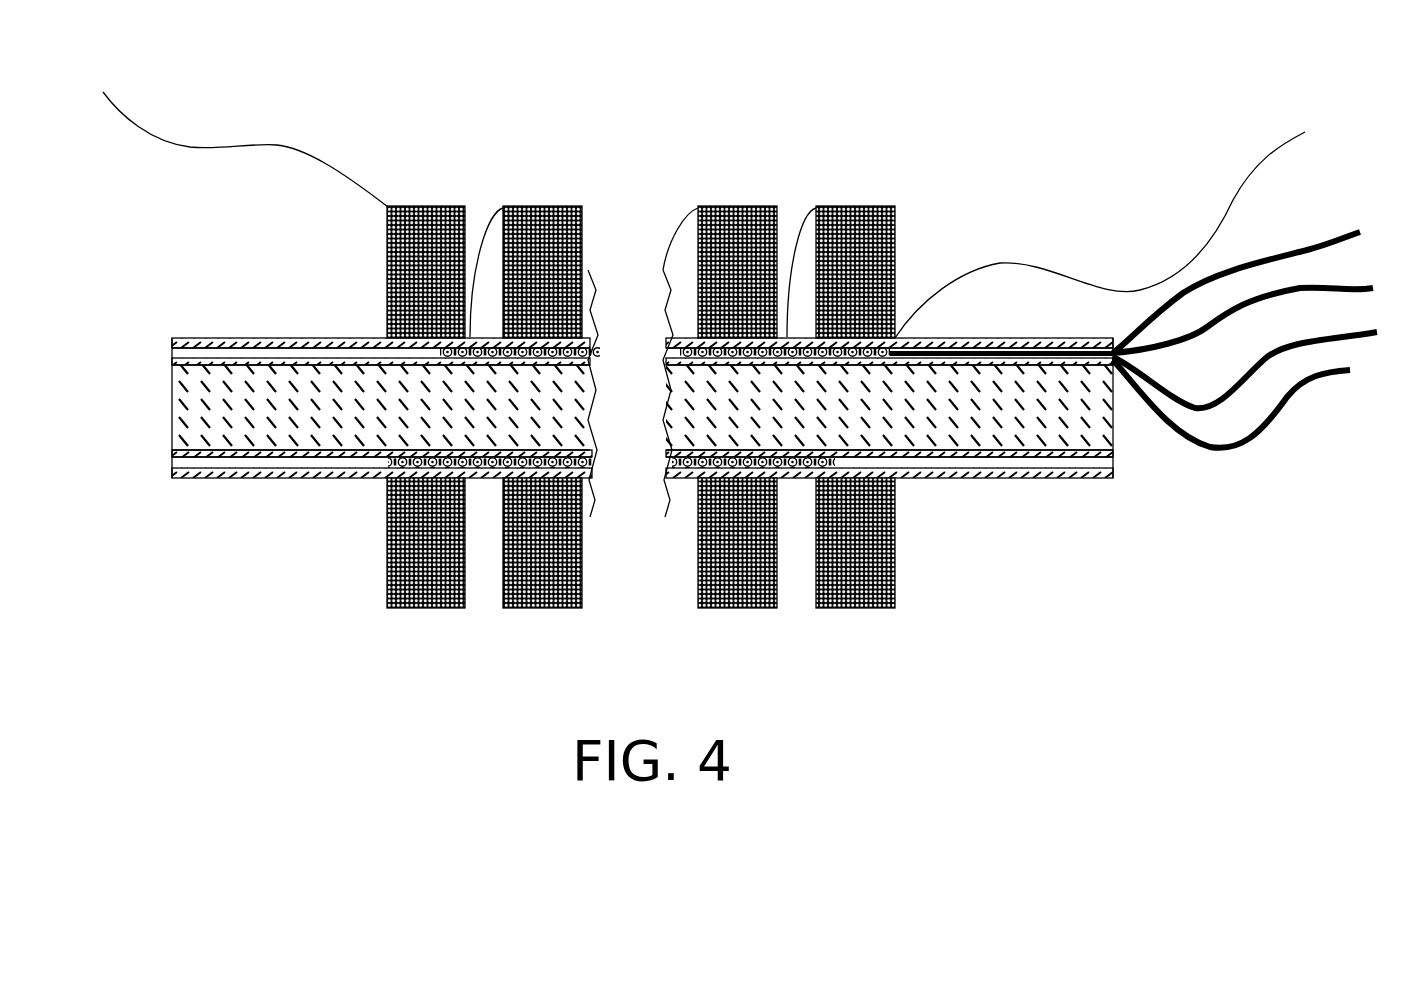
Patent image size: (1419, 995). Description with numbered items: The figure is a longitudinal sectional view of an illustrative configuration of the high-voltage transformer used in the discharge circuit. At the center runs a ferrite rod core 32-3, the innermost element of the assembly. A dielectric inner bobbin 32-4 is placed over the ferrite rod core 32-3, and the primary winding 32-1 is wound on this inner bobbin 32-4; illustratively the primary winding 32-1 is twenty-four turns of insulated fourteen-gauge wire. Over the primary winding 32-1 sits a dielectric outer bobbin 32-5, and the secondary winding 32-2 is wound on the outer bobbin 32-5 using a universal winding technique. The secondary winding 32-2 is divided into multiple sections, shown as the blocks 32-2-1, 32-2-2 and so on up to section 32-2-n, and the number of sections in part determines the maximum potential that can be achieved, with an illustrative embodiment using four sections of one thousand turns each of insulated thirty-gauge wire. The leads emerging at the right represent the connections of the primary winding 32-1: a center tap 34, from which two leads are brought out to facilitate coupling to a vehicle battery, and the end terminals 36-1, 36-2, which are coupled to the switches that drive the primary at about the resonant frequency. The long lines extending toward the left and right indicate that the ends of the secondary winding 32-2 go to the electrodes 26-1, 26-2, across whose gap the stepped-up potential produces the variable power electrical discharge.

The primary winding 32-1 is at (665, 466).
The secondary winding 32-2 is at (895, 173).
The secondary winding section 32-2-n is at (402, 608).
The secondary winding section 32-2-2 is at (728, 608).
The secondary winding section 32-2-1 is at (875, 608).
The ferrite rod core 32-3 is at (172, 405).
The dielectric inner bobbin 32-4 is at (172, 362).
The dielectric outer bobbin 32-5 is at (172, 342).
The center tap 34 is at (1370, 290).
The end terminal 36-1 is at (1320, 248).
The end terminal 36-2 is at (1240, 447).
The electrode 26-1 is at (133, 122).
The electrode 26-2 is at (1275, 150).